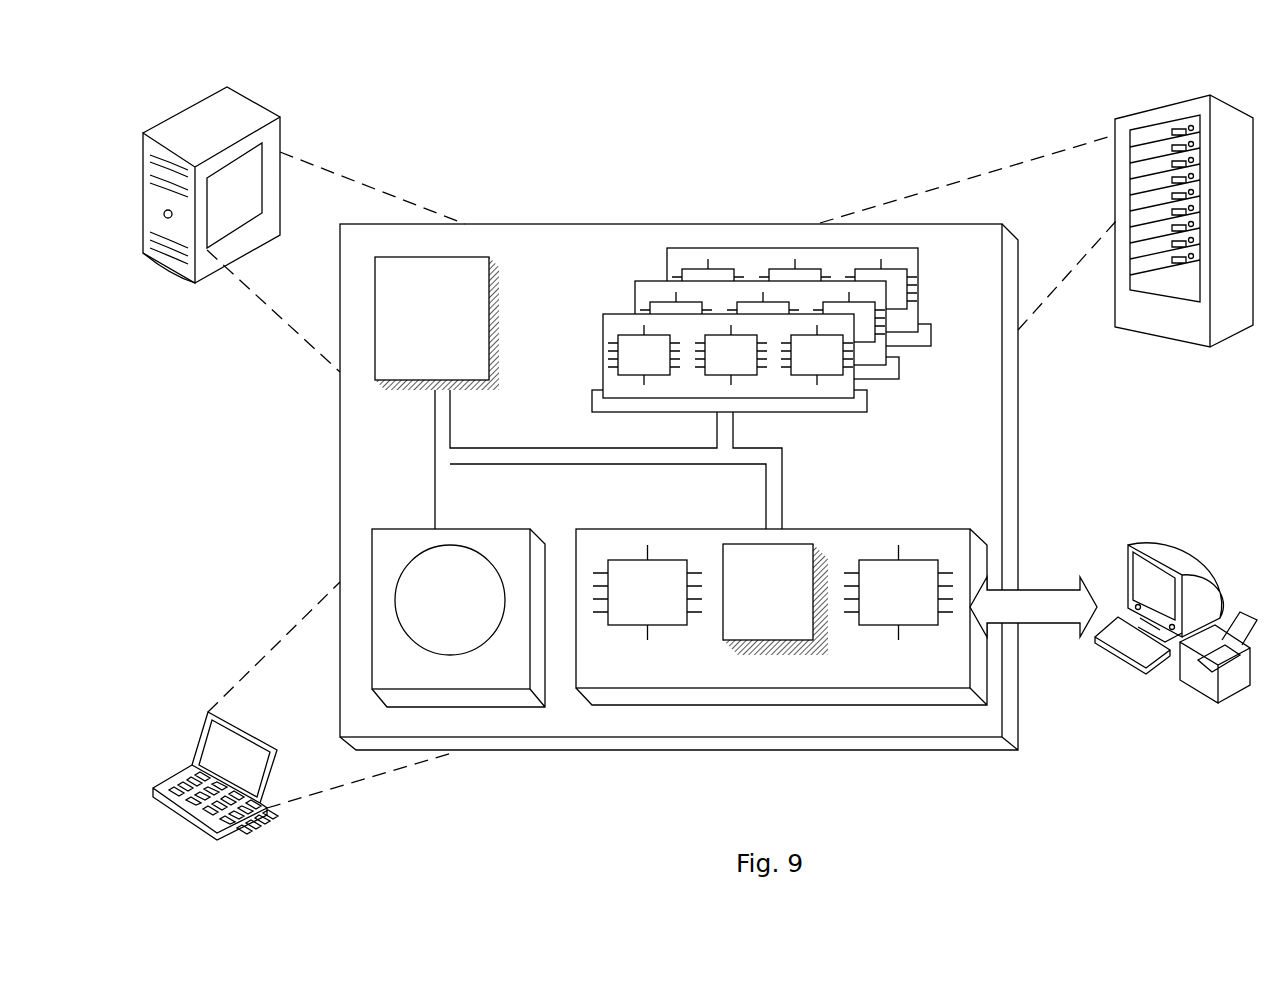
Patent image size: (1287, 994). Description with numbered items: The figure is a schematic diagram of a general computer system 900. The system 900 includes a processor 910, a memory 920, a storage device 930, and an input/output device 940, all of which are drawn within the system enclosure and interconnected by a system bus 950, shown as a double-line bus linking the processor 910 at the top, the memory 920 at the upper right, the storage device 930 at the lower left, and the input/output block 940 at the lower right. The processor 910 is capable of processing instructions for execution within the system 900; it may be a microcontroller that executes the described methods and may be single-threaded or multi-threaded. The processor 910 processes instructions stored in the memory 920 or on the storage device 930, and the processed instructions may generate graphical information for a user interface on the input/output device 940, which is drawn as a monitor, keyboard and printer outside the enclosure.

The system 900 is at (509, 108).
The processor 910 is at (497, 266).
The memory 920 is at (924, 376).
The storage device 930 is at (415, 528).
The input/output device 940 is at (1128, 553).
The system bus 950 is at (607, 465).